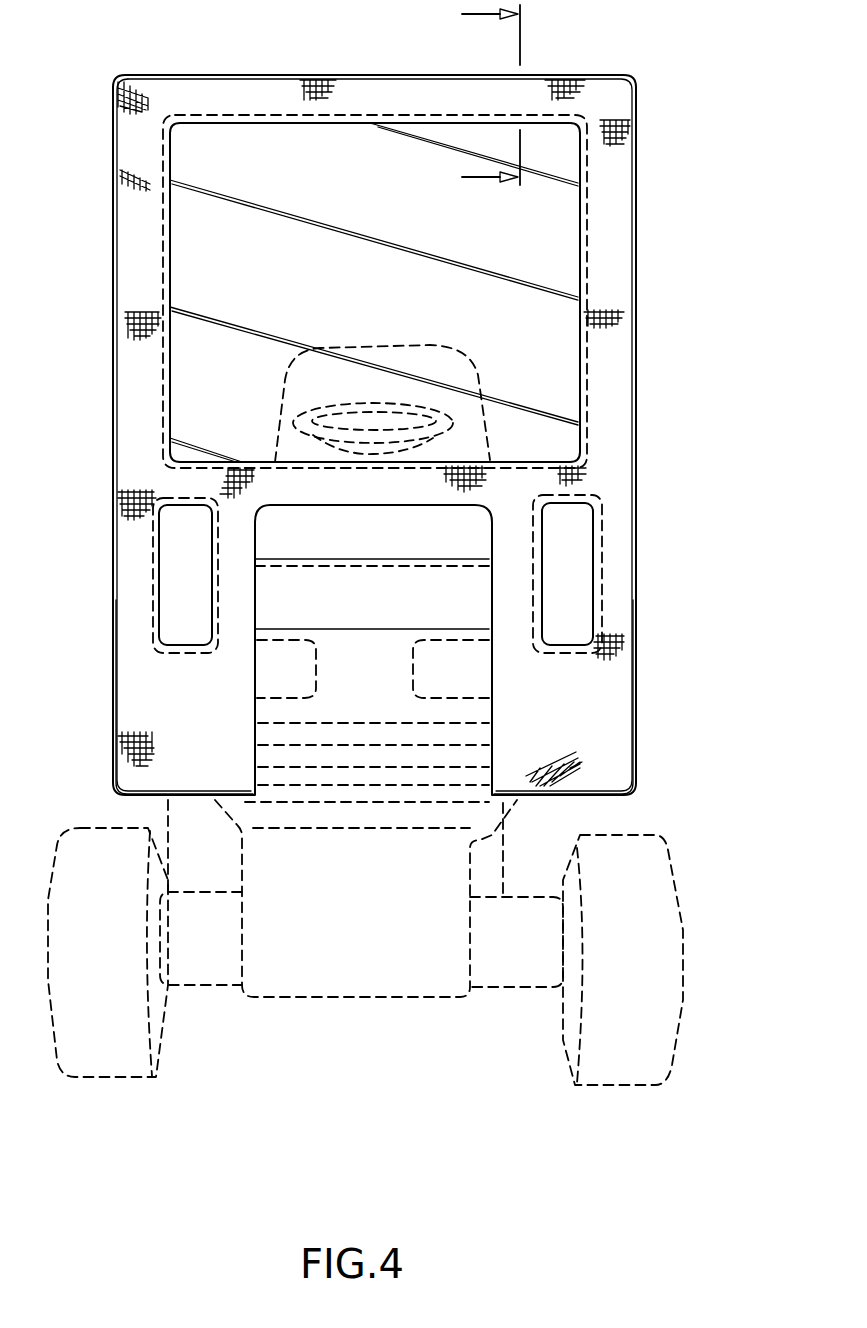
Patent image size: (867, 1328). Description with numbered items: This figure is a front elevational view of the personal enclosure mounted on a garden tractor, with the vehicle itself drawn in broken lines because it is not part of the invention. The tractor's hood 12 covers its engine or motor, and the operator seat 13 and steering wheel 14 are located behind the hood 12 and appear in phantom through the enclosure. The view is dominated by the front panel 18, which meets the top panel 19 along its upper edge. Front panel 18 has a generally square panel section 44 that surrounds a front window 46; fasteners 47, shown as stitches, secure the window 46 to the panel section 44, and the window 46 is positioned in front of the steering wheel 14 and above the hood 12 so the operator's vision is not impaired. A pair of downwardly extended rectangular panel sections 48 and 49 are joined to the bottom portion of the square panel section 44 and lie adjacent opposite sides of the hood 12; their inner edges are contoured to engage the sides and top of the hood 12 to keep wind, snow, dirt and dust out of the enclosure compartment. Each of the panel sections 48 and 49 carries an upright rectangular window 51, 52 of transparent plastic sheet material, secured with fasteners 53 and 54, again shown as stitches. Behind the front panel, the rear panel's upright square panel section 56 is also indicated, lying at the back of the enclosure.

The hood 12 is at (473, 96).
The operator seat 13 is at (405, 343).
The steering wheel 14 is at (349, 403).
The front panel 18 is at (652, 262).
The top panel 19 is at (375, 57).
The square panel section 44 is at (123, 231).
The front window 46 is at (187, 287).
The fasteners 47 is at (163, 405).
The rectangular panel section 48 is at (143, 712).
The rectangular panel section 49 is at (610, 722).
The upright rectangular window 51 is at (175, 547).
The upright rectangular window 52 is at (571, 551).
The fasteners 53 is at (151, 605).
The fasteners 54 is at (602, 583).
The upright square panel section 56 is at (406, 583).